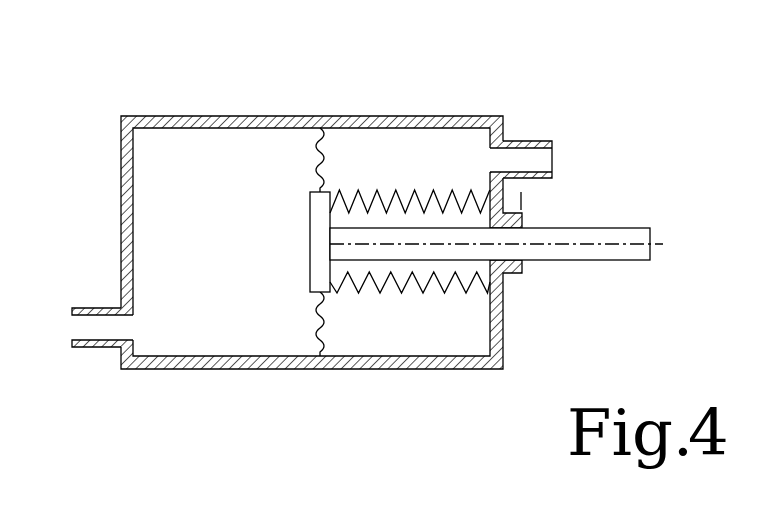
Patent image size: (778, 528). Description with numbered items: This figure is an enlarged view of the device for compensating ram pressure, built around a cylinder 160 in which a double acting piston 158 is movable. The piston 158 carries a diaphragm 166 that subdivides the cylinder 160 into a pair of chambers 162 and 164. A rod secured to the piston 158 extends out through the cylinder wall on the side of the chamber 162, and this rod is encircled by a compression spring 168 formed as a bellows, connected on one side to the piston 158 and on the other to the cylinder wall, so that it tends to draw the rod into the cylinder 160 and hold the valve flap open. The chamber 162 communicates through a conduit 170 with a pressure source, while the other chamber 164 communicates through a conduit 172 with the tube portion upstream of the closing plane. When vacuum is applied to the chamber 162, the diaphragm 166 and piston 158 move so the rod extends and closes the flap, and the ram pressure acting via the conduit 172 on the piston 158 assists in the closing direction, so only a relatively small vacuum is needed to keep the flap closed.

The double acting piston 158 is at (316, 238).
The cylinder 160 is at (315, 104).
The chamber 162 is at (455, 142).
The chamber 164 is at (228, 148).
The diaphragm 166 is at (328, 163).
The compression spring 168 is at (395, 295).
The conduit 170 is at (540, 145).
The conduit 172 is at (83, 323).